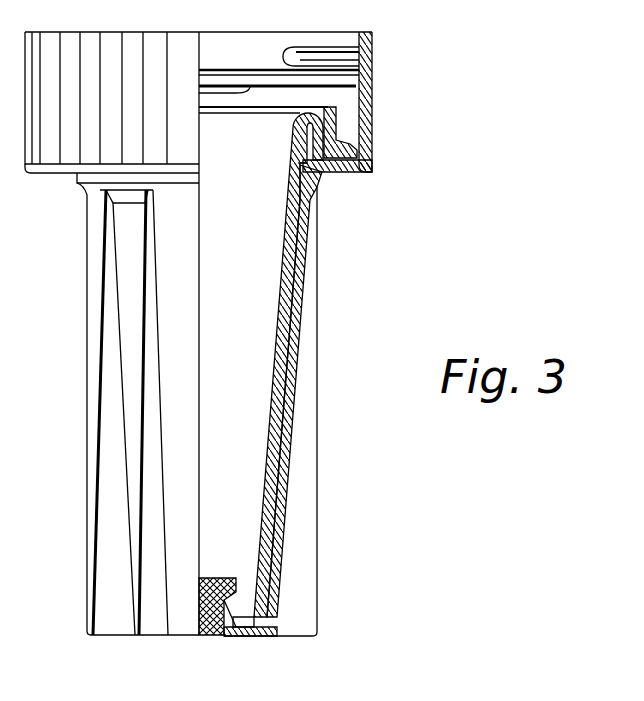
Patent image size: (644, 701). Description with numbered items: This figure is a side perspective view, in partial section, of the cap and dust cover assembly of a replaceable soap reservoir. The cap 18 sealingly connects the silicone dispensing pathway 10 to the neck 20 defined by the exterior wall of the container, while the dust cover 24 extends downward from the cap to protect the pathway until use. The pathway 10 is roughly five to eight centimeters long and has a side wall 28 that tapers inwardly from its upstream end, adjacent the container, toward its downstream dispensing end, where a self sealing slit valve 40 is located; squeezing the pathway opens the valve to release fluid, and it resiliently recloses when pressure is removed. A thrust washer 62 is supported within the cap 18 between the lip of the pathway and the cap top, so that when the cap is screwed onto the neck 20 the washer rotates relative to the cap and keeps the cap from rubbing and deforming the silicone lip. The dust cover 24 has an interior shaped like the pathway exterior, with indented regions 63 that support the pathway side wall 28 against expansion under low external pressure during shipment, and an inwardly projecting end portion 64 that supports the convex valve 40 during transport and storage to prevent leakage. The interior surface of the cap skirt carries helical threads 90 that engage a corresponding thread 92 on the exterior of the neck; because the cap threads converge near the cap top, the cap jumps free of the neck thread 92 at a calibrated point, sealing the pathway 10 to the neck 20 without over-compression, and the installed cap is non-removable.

The pathway 10 is at (286, 474).
The cap 18 is at (362, 118).
The neck 20 is at (340, 36).
The dust cover 24 is at (298, 342).
The side wall 28 is at (290, 388).
The self sealing slit valve 40 is at (217, 580).
The thrust washer 62 is at (347, 173).
The indented regions 63 is at (153, 587).
The inwardly projecting end portion 64 is at (220, 608).
The helical threads 90 is at (361, 88).
The neck thread 92 is at (317, 52).